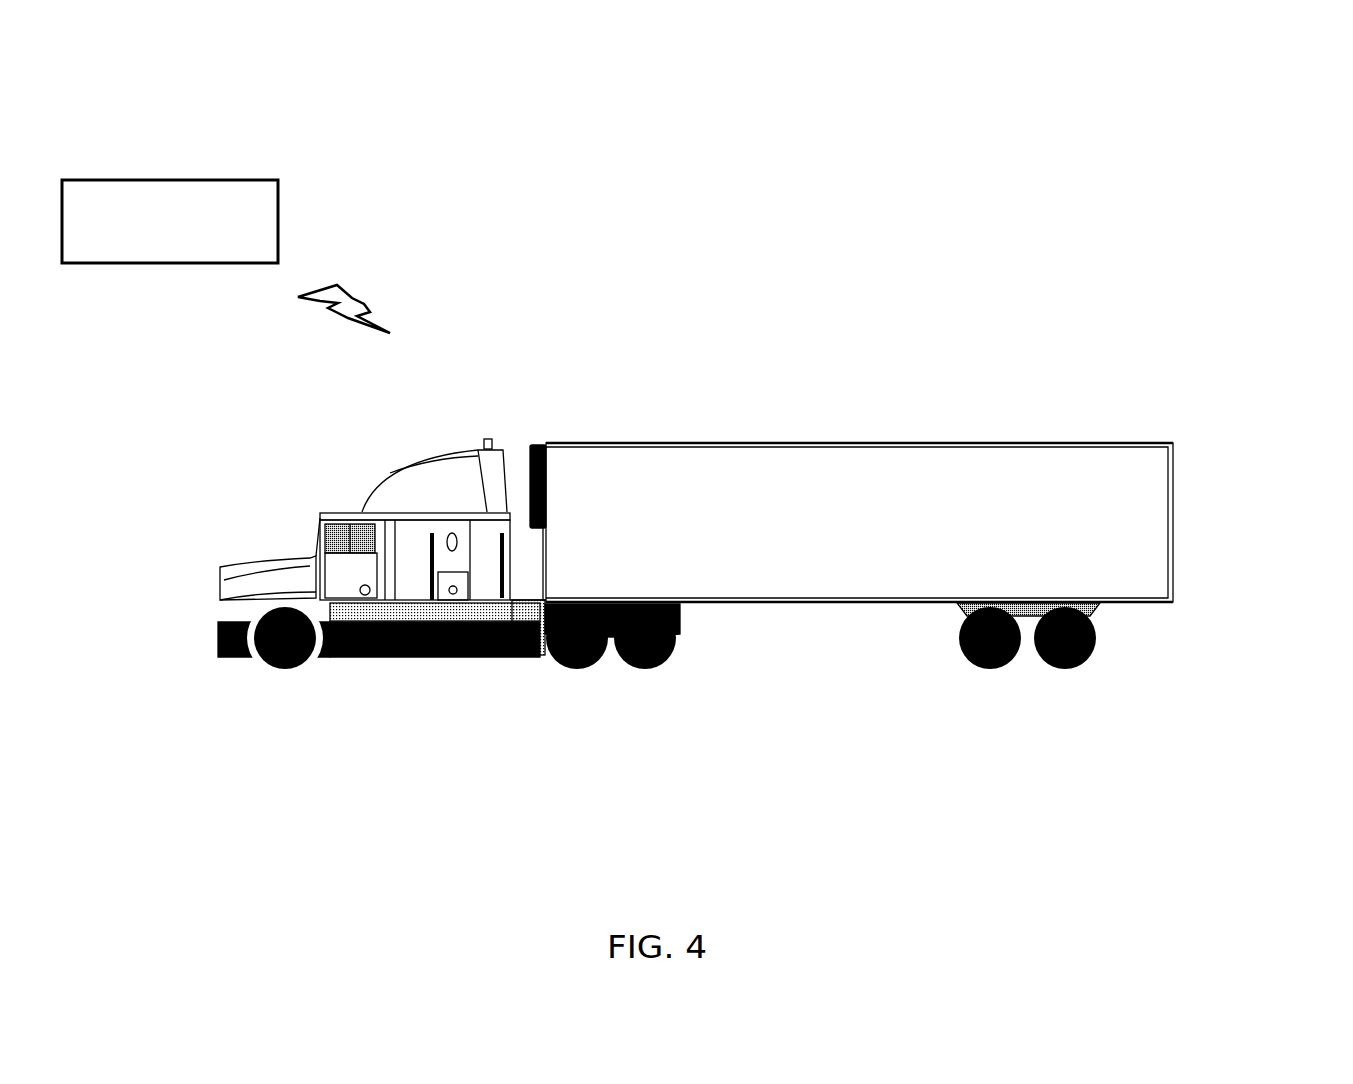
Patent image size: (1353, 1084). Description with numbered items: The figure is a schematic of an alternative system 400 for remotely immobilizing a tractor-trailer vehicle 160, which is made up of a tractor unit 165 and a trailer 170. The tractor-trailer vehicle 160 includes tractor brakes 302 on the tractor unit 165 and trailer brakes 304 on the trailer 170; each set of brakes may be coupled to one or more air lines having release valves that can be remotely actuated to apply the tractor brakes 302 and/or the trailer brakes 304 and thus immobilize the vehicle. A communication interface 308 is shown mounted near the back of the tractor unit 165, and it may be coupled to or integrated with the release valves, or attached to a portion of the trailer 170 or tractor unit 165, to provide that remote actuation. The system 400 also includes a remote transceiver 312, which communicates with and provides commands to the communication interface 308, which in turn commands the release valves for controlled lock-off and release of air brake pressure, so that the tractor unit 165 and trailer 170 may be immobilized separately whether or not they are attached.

The system 400 is at (1254, 135).
The remote transceiver 312 is at (226, 256).
The tractor-trailer vehicle 160 is at (848, 367).
The tractor unit 165 is at (298, 500).
The trailer 170 is at (1119, 429).
The communication interface 308 is at (536, 444).
The tractor brakes 302 is at (314, 666).
The trailer brakes 304 is at (1029, 666).